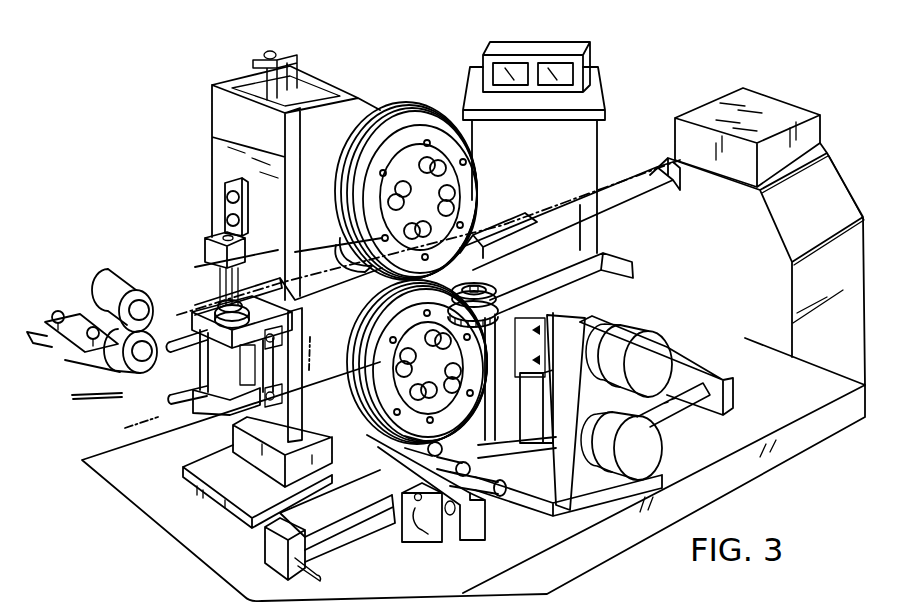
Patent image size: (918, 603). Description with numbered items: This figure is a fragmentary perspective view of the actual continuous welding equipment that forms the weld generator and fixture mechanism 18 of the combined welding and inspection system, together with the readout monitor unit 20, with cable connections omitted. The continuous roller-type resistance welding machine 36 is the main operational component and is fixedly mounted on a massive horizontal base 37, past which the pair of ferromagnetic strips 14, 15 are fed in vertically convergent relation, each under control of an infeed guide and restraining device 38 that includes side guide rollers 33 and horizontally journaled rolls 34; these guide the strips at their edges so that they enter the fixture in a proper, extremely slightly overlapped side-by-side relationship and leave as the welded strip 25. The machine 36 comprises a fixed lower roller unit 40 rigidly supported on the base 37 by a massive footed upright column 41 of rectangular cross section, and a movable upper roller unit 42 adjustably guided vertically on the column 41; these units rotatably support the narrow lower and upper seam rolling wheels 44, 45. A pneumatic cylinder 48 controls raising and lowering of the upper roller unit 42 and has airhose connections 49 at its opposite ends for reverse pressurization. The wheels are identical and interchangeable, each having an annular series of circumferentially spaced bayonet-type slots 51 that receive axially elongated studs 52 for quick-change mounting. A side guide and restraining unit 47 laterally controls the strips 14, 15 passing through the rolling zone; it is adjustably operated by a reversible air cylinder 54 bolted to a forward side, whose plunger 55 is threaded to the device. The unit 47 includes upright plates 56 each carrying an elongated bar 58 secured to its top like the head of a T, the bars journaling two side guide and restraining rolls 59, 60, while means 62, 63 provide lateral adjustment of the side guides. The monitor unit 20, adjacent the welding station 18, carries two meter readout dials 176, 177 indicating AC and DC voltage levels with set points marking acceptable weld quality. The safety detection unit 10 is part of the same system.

The safety detection unit 10 is at (726, 92).
The ferromagnetic strip 14 is at (185, 296).
The ferromagnetic strip 15 is at (214, 388).
The weld generator and fixture mechanism 18 is at (113, 537).
The monitor unit 20 is at (558, 131).
The welded strip 25 is at (613, 178).
The side guide rollers 33 is at (90, 340).
The horizontally journaled rolls 34 is at (117, 280).
The roller-type resistance welding machine 36 is at (385, 98).
The horizontal base 37 is at (752, 470).
The infeed guide and restraining device 38 is at (105, 314).
The lower roller unit 40 is at (367, 437).
The upright column 41 is at (205, 258).
The upper roller unit 42 is at (410, 160).
The lower seam rolling wheel 44 is at (383, 392).
The upper seam rolling wheel 45 is at (372, 154).
The side guide and restraining unit 47 is at (738, 387).
The pneumatic cylinder 48 is at (195, 378).
The airhose connections 49 is at (210, 368).
The bayonet-type slots 51 is at (432, 165).
The studs 52 is at (452, 212).
The reversible air cylinder 54 is at (390, 520).
The plunger 55 is at (497, 455).
The upright plates 56 is at (573, 480).
The elongated bar 58 is at (583, 262).
The side guide and restraining roll 59 is at (494, 300).
The side guide and restraining roll 60 is at (345, 252).
The lateral adjustment means 62 is at (652, 343).
The lateral adjustment means 63 is at (652, 442).
The meter readout dial 176 is at (510, 62).
The meter readout dial 177 is at (563, 62).